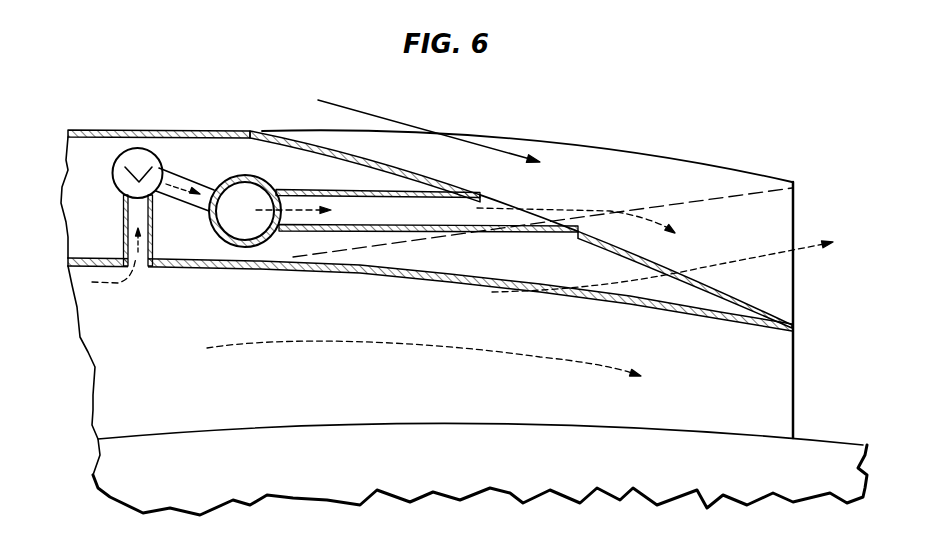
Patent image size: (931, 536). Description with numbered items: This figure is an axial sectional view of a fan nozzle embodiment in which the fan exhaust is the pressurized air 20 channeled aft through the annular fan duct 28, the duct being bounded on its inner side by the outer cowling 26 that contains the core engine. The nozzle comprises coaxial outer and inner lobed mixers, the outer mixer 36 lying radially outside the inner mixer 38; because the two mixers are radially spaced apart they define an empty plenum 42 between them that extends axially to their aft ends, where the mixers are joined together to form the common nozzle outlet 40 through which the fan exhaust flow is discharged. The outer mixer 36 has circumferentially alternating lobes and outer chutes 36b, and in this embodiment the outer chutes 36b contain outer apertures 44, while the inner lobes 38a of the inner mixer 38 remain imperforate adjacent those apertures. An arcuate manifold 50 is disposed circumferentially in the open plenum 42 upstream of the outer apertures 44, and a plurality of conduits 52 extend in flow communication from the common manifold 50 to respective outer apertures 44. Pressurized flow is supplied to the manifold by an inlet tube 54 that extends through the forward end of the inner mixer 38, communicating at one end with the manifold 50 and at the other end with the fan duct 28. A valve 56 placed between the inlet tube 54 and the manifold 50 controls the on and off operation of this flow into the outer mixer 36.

The pressurized air 20 is at (372, 116).
The outer cowling 26 is at (481, 462).
The fan duct 28 is at (183, 405).
The outer lobed mixer 36 is at (679, 161).
The outer chutes 36b is at (678, 273).
The inner lobed mixer 38 is at (710, 319).
The inner lobes 38a is at (453, 277).
The nozzle outlet 40 is at (795, 365).
The plenum 42 is at (213, 166).
The outer apertures 44 is at (520, 198).
The arcuate manifold 50 is at (240, 174).
The conduits 52 is at (465, 233).
The inlet tube 54 is at (153, 242).
The valve 56 is at (137, 147).